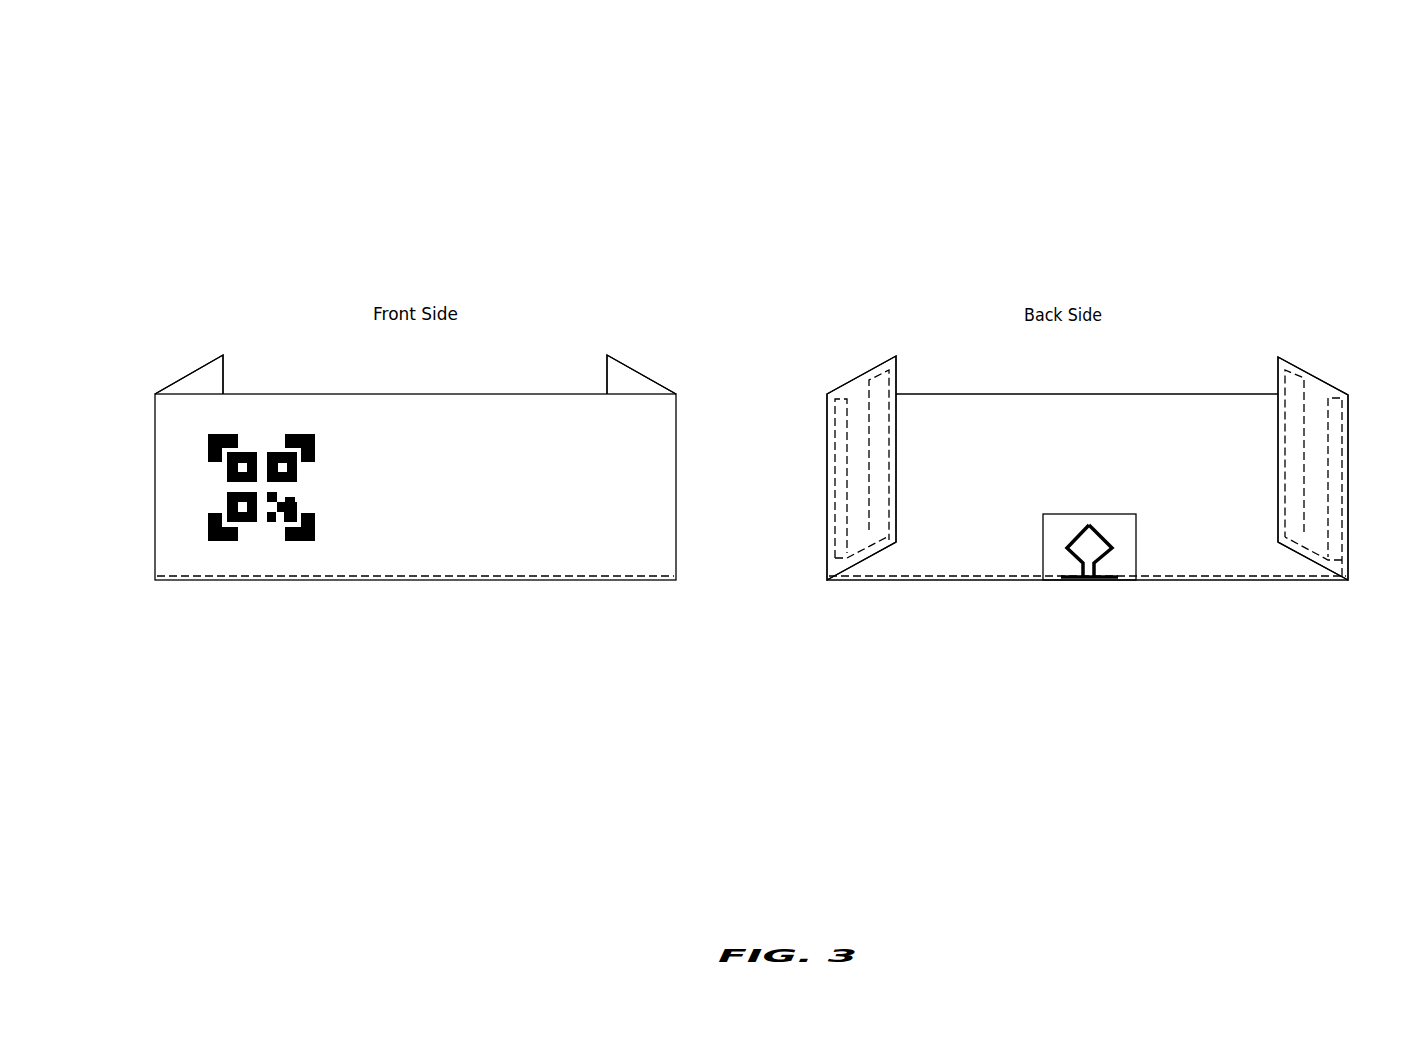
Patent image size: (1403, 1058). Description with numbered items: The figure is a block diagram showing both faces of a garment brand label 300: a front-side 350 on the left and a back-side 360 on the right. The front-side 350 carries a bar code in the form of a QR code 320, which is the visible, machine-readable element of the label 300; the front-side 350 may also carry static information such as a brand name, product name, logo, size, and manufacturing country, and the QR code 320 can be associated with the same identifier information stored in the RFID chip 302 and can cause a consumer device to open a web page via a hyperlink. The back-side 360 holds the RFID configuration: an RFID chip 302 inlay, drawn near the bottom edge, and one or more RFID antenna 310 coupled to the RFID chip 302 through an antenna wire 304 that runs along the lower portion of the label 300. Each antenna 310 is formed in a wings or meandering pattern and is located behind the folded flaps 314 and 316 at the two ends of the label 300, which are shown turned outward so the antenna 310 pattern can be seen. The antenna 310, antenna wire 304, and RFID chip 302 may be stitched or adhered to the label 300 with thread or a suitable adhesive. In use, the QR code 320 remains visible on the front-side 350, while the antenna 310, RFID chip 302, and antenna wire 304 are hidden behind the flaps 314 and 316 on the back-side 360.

The garment brand label 300 is at (297, 103).
The front-side 350 is at (257, 318).
The back-side 360 is at (935, 319).
The RFID chip 302 is at (1090, 580).
The antenna wire 304 is at (618, 575).
The RFID antenna 310 is at (882, 372).
The folded flap 314 is at (213, 375).
The folded flap 316 is at (620, 375).
The QR code 320 is at (316, 521).